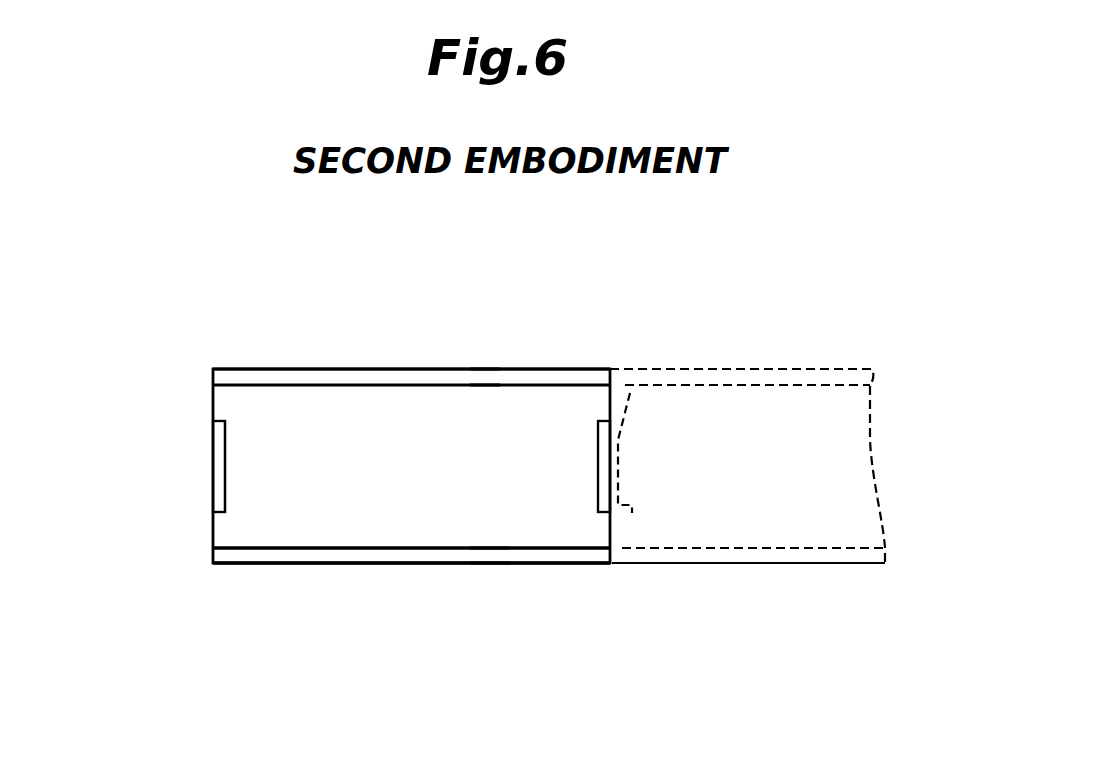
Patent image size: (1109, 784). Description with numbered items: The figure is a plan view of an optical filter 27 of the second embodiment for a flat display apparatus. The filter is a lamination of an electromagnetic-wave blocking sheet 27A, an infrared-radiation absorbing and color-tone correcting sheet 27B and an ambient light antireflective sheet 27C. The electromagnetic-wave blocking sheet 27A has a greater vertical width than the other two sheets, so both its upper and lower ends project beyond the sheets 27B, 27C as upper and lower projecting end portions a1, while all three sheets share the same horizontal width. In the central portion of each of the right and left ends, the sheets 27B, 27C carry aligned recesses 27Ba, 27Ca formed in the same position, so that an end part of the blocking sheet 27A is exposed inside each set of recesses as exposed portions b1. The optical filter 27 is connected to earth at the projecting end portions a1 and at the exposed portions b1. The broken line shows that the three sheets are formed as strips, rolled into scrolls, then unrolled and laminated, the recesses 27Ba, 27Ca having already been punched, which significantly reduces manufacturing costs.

The optical filter 27 is at (392, 369).
The electromagnetic-wave blocking sheet 27A is at (335, 369).
The infrared-radiation absorbing and color-tone correcting sheet 27B is at (377, 532).
The ambient light antireflective sheet 27C is at (377, 532).
The recess 27Ba is at (213, 428).
The recess 27Ca is at (598, 508).
The projecting end portion a1 is at (482, 377).
The exposed portion b1 is at (213, 505).